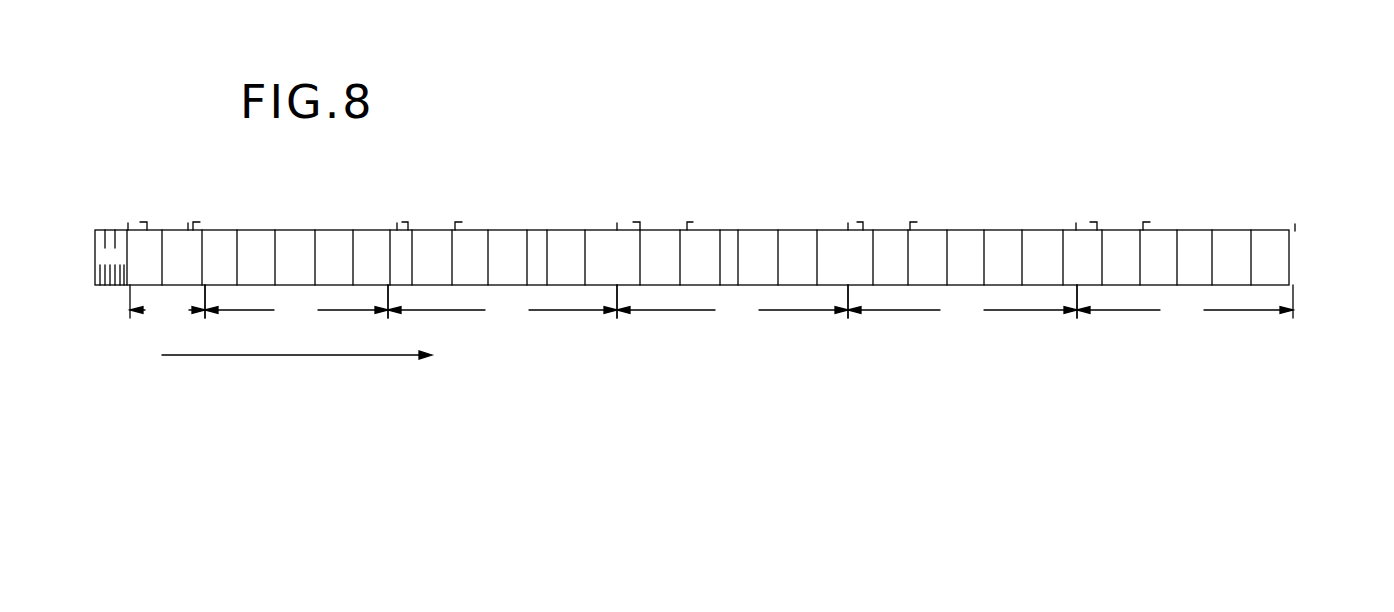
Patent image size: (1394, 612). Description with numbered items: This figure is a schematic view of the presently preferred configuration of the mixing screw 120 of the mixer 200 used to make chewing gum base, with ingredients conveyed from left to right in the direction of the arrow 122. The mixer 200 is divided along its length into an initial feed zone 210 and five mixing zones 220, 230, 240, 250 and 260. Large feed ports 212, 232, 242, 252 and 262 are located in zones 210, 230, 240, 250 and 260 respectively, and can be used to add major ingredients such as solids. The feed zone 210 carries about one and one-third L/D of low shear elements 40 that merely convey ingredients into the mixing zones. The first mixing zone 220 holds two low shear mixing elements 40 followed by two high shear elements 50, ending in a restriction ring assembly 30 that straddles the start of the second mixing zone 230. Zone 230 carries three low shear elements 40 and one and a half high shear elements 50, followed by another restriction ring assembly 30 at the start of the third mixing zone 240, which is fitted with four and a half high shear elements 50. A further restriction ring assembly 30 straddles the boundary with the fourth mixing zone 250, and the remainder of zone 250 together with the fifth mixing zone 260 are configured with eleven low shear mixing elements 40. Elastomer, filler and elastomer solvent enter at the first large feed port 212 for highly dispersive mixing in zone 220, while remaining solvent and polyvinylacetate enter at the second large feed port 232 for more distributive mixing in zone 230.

The mixing screw 120 is at (1290, 258).
The arrow 122 is at (285, 356).
The mixer 200 is at (1234, 330).
The restriction ring assembly 30 is at (370, 242).
The low shear mixing element 40 is at (172, 238).
The high shear mixing element 50 is at (325, 240).
The initial feed zone 210 is at (167, 304).
The first large feed port 212 is at (185, 230).
The first mixing zone 220 is at (296, 304).
The second mixing zone 230 is at (502, 304).
The second large feed port 232 is at (422, 230).
The third mixing zone 240 is at (732, 304).
The large feed port 242 is at (650, 232).
The fourth mixing zone 250 is at (962, 304).
The large feed port 252 is at (883, 228).
The fifth mixing zone 260 is at (1185, 304).
The large feed port 262 is at (1107, 228).